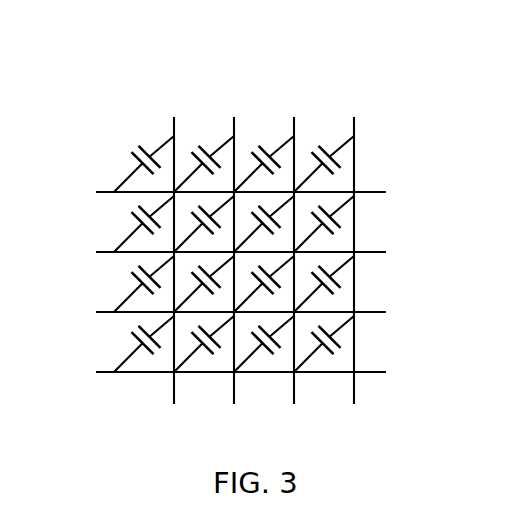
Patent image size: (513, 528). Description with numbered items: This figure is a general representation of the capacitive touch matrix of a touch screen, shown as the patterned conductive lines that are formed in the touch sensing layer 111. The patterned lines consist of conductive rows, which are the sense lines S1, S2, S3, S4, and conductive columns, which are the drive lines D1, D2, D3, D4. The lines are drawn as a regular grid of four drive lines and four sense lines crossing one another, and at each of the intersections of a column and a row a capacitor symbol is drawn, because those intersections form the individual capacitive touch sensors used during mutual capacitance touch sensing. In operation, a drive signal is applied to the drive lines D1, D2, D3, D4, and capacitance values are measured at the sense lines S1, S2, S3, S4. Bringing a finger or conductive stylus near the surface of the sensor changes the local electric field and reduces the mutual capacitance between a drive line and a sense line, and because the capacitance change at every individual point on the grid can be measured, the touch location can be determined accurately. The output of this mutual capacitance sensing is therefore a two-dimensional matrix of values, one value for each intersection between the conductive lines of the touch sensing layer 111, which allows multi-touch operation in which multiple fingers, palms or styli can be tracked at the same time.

The touch sensing layer 111 is at (79, 95).
The drive line D1 is at (225, 194).
The drive line D2 is at (225, 251).
The drive line D3 is at (225, 311).
The drive line D4 is at (225, 370).
The sense line S1 is at (174, 247).
The sense line S2 is at (234, 247).
The sense line S3 is at (294, 247).
The sense line S4 is at (354, 247).